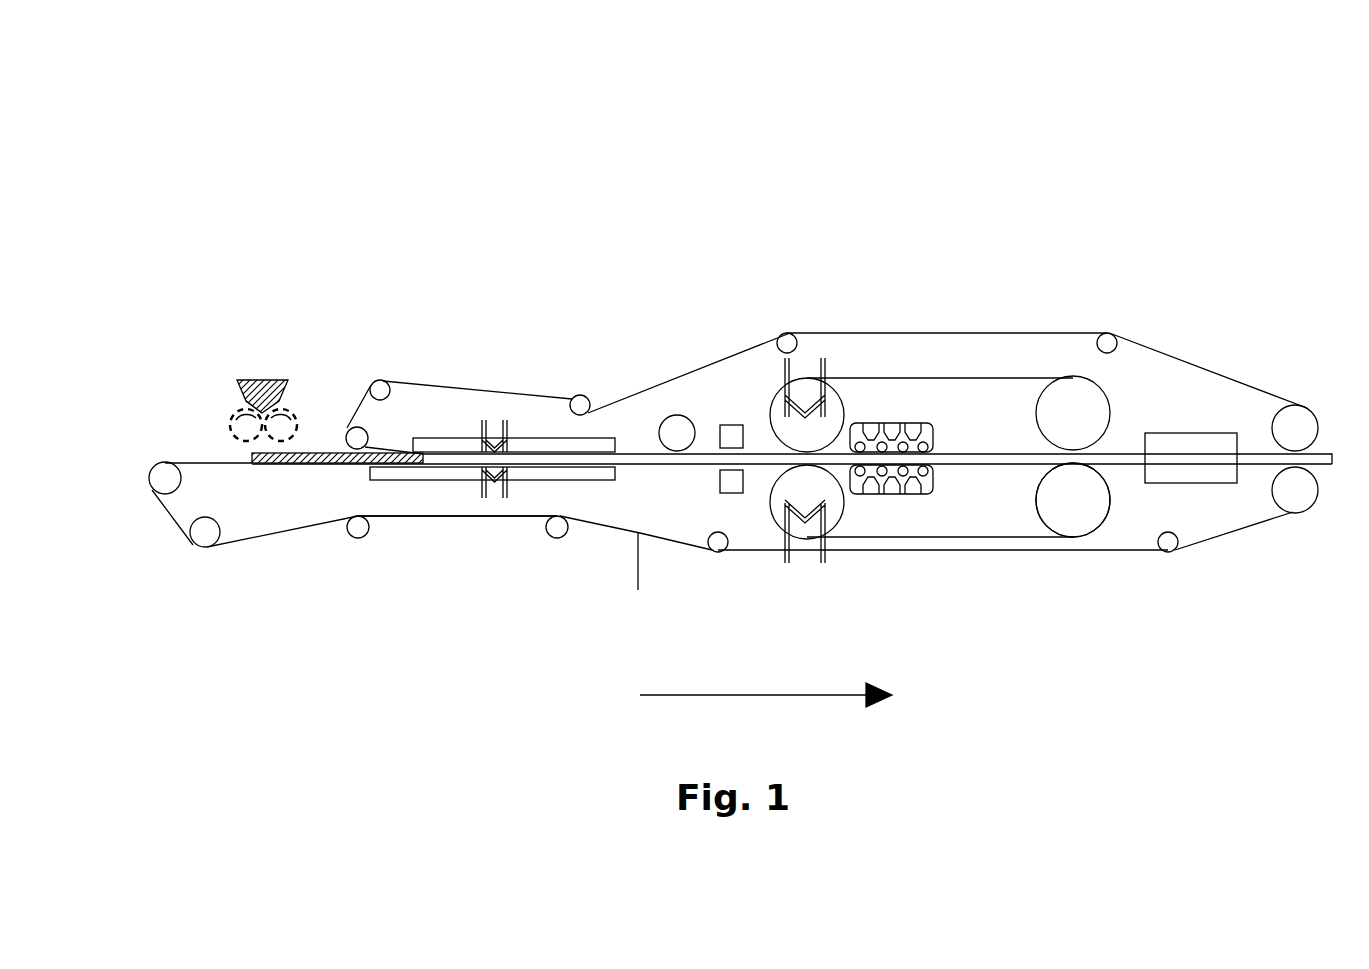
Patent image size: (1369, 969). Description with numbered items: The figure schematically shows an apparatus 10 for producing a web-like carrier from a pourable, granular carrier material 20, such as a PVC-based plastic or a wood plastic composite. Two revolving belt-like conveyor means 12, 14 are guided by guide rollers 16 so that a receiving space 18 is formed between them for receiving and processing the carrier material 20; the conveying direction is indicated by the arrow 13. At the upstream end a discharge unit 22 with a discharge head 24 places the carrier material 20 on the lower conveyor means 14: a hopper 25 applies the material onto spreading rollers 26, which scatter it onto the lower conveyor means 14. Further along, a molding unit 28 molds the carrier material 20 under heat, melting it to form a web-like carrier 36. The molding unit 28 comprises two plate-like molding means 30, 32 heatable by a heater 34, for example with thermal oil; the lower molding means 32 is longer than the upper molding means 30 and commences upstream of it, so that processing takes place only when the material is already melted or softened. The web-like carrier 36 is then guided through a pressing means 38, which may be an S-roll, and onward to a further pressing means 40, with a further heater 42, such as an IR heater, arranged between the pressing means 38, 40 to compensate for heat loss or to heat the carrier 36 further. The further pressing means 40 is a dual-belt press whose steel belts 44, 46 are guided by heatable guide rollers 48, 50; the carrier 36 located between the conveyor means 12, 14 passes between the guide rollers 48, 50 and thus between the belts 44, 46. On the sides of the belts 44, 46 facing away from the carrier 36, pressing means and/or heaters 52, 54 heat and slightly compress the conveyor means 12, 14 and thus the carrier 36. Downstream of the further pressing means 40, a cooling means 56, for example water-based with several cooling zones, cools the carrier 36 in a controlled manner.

The apparatus 10 is at (1190, 200).
The upper conveyor means 12 is at (1040, 333).
The arrow 13 is at (762, 694).
The lower conveyor means 14 is at (1085, 537).
The guide rollers 16 is at (153, 467).
The receiving space 18 is at (385, 480).
The carrier material 20 is at (260, 380).
The discharge unit 22 is at (228, 364).
The discharge heads 24 is at (278, 380).
The hopper 25 is at (233, 393).
The spreading rollers 26 is at (237, 423).
The molding unit 28 is at (506, 360).
The upper molding means 30 is at (442, 440).
The lower molding means 32 is at (455, 480).
The heater 34 is at (507, 420).
The web-like carrier 36 is at (577, 458).
The pressing means 38 is at (673, 414).
The further pressing means 40 is at (913, 252).
The further heater 42 is at (730, 425).
The upper steel belt 44 is at (980, 378).
The lower steel belt 46 is at (930, 550).
The upper guide rollers 48 is at (773, 392).
The lower guide rollers 50 is at (1093, 537).
The upper pressing means and/or heater 52 is at (885, 423).
The lower pressing means and/or heater 54 is at (893, 494).
The cooling means 56 is at (1190, 433).